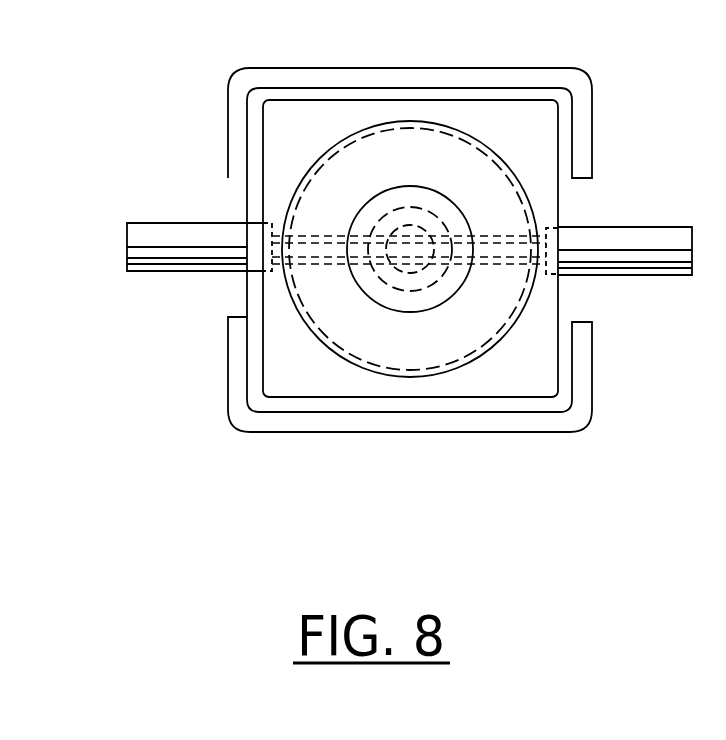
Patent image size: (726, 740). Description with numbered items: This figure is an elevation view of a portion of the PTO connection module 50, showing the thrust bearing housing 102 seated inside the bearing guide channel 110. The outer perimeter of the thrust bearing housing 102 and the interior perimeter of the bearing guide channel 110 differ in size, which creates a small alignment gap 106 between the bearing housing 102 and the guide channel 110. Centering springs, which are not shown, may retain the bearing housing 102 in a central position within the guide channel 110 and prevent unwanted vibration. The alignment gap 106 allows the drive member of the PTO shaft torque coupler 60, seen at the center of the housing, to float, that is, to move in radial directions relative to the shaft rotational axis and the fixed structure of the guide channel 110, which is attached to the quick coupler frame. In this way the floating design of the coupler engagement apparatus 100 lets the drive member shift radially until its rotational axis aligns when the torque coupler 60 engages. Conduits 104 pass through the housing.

The PTO connection module 50 is at (582, 54).
The PTO shaft torque coupler 60 is at (443, 382).
The coupler engagement apparatus 100 is at (216, 103).
The thrust bearing housing 102 is at (549, 301).
The conduit 104 is at (208, 222).
The alignment gap 106 is at (388, 92).
The bearing guide channel 110 is at (573, 421).